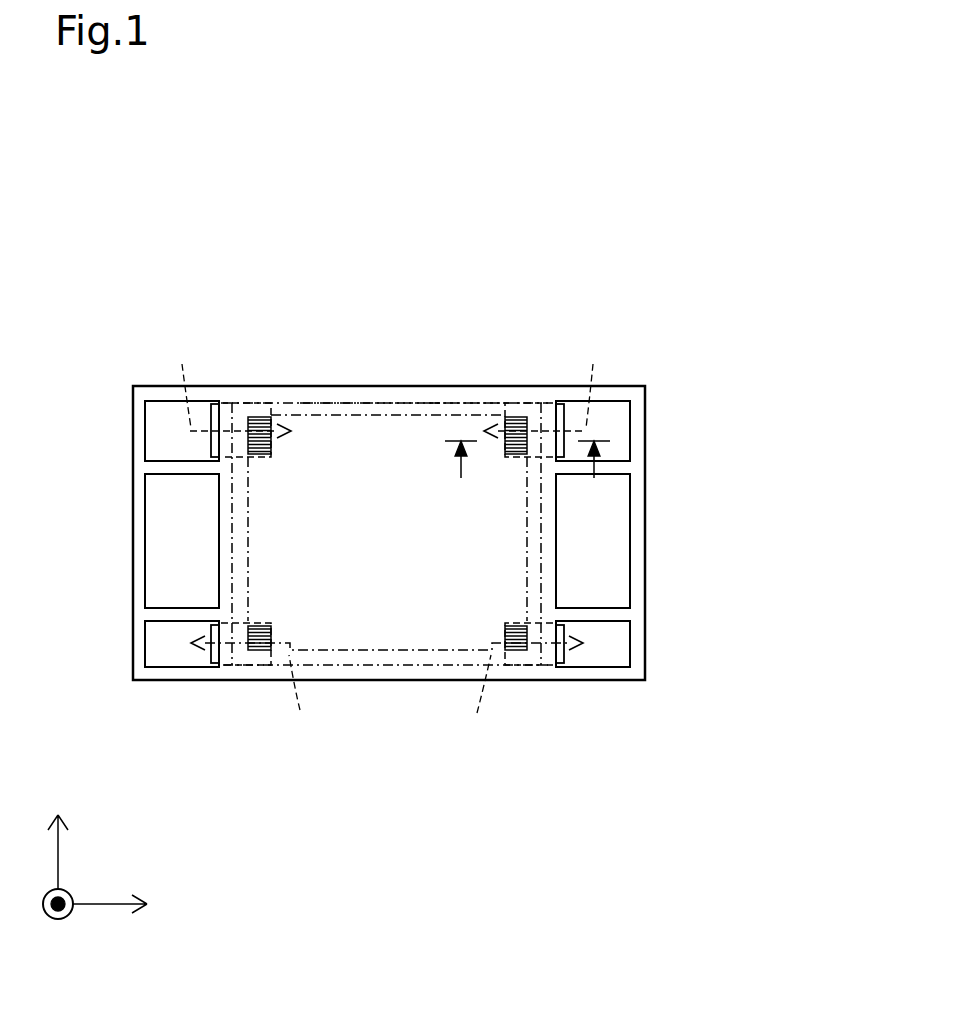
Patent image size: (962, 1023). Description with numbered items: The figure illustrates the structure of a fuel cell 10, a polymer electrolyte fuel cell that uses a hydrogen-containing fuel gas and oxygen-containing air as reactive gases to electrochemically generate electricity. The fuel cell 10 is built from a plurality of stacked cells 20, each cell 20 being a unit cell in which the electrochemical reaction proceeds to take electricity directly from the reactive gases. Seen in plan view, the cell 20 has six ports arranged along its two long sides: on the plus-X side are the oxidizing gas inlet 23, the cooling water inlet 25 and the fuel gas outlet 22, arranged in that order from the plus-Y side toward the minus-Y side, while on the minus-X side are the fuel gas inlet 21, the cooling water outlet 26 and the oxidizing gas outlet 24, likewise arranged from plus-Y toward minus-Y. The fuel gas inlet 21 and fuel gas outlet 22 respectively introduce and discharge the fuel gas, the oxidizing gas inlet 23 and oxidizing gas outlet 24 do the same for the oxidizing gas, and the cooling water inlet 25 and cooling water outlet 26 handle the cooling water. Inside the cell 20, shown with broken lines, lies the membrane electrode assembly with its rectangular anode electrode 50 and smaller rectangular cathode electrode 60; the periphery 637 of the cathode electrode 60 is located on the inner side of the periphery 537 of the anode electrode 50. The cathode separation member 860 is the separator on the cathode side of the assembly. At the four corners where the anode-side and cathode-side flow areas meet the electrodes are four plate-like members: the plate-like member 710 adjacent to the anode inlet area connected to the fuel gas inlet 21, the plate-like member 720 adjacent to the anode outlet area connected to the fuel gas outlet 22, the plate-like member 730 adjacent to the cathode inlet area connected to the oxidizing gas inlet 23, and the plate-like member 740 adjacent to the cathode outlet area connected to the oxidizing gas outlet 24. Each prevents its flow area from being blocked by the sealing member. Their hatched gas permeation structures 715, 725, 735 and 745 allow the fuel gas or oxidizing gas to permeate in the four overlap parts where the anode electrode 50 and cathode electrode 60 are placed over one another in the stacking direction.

The fuel cell 10 is at (689, 230).
The cell 20 is at (660, 475).
The fuel gas inlet 21 is at (146, 429).
The fuel gas outlet 22 is at (630, 651).
The oxidizing gas inlet 23 is at (630, 430).
The oxidizing gas outlet 24 is at (146, 649).
The cooling water inlet 25 is at (630, 554).
The cooling water outlet 26 is at (146, 552).
The anode electrode 50 is at (372, 403).
The cathode electrode 60 is at (305, 420).
The periphery of the anode electrode 537 is at (400, 408).
The periphery of the cathode electrode 637 is at (335, 408).
The cathode separation member 860 is at (460, 406).
The plate-like member 710 is at (224, 410).
The gas permeation structure 715 is at (254, 418).
The plate-like member 720 is at (547, 665).
The gas permeation structure 725 is at (512, 650).
The plate-like member 730 is at (549, 410).
The gas permeation structure 735 is at (511, 418).
The plate-like member 740 is at (225, 665).
The gas permeation structure 745 is at (252, 650).